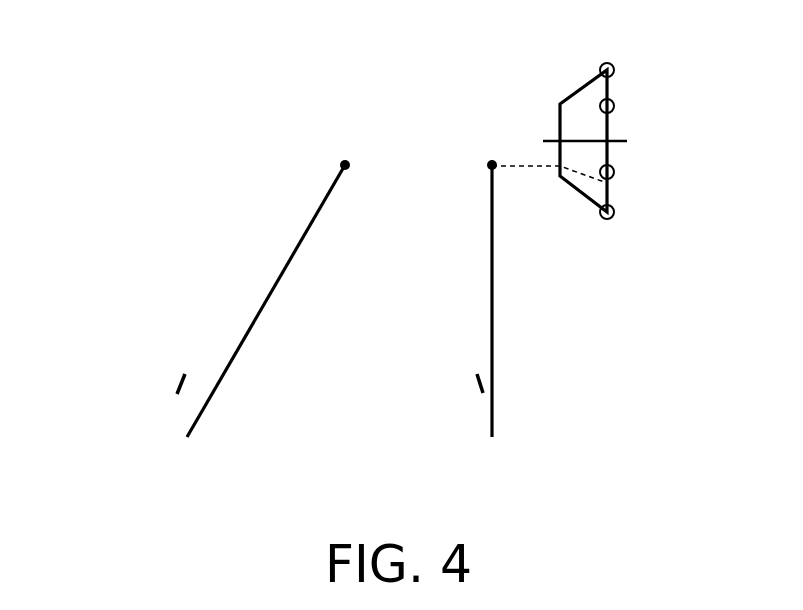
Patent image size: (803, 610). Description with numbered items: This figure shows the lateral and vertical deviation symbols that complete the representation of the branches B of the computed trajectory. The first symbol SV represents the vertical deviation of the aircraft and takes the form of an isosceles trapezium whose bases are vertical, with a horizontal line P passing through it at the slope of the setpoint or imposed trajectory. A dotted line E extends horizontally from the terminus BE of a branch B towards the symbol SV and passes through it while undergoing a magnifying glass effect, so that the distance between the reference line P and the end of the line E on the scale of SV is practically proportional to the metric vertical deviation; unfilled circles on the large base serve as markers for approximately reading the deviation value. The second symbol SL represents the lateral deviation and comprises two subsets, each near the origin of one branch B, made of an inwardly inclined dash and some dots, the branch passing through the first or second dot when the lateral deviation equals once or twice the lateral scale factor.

The branch B is at (287, 257).
The terminus of the branch BE is at (488, 165).
The vertical deviation symbol SV is at (556, 65).
The lateral deviation symbol SL is at (128, 347).
The horizontal line P is at (627, 140).
The dotted line E is at (609, 187).